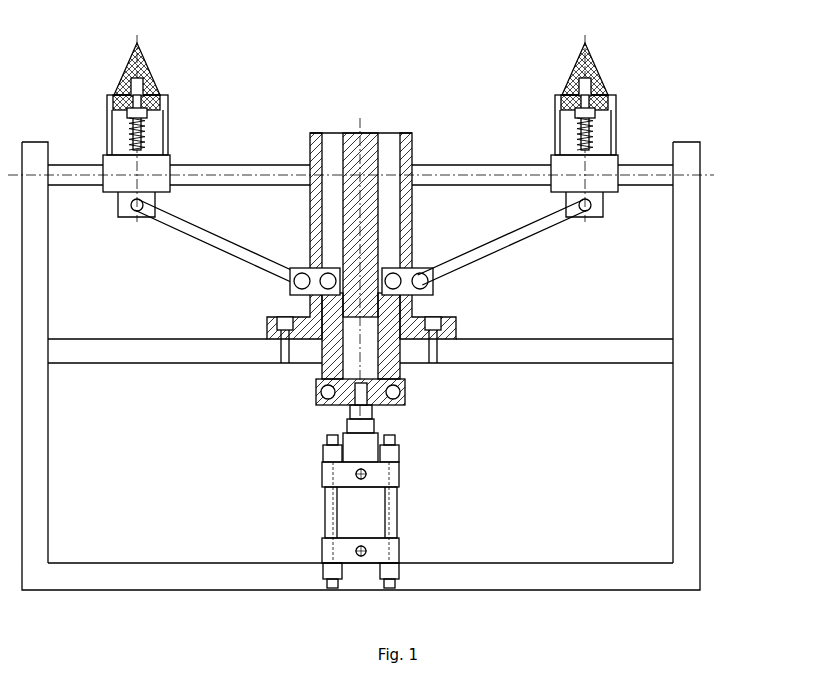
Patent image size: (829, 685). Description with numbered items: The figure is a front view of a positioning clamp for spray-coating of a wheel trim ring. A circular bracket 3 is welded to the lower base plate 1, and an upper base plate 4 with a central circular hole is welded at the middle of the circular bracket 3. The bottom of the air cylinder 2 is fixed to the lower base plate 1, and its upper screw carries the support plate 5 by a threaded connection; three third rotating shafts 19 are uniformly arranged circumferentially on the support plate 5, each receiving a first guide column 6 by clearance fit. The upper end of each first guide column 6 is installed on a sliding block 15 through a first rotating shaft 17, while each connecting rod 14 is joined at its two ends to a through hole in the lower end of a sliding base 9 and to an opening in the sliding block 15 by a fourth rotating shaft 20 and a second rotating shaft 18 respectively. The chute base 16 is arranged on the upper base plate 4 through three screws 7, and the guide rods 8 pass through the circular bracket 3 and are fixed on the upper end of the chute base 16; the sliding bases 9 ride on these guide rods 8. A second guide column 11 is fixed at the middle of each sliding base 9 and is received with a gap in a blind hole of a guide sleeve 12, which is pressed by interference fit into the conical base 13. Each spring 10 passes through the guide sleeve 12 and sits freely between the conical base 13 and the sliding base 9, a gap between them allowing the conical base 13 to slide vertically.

The lower base plate 1 is at (402, 538).
The air cylinder 2 is at (552, 489).
The circular bracket 3 is at (727, 352).
The upper base plate 4 is at (415, 332).
The support plate 5 is at (549, 335).
The first guide column 6 is at (552, 307).
The screw 7 is at (524, 248).
The guide rod 8 is at (394, 150).
The sliding base 9 is at (665, 151).
The spring 10 is at (679, 102).
The second guide column 11 is at (678, 90).
The guide sleeve 12 is at (655, 63).
The conical base 13 is at (624, 70).
The connecting rod 14 is at (503, 157).
The sliding block 15 is at (428, 162).
The chute base 16 is at (361, 225).
The first rotating shaft 17 is at (302, 162).
The second rotating shaft 18 is at (272, 159).
The third rotating shaft 19 is at (220, 158).
The fourth rotating shaft 20 is at (112, 120).